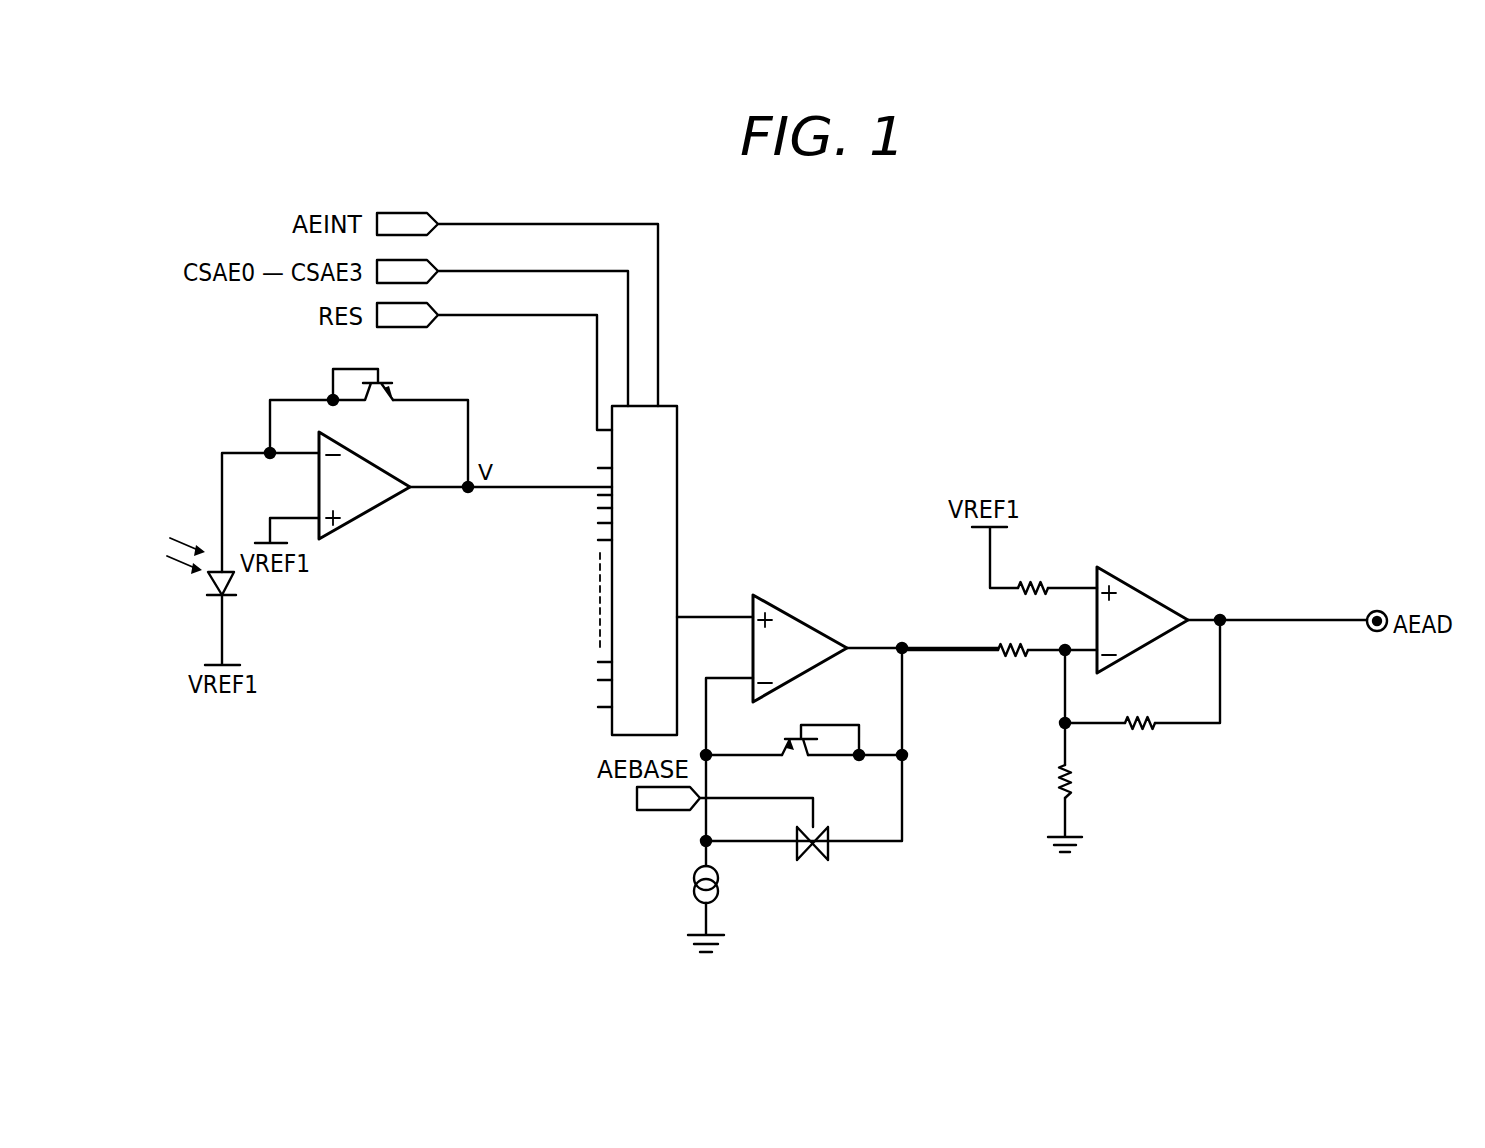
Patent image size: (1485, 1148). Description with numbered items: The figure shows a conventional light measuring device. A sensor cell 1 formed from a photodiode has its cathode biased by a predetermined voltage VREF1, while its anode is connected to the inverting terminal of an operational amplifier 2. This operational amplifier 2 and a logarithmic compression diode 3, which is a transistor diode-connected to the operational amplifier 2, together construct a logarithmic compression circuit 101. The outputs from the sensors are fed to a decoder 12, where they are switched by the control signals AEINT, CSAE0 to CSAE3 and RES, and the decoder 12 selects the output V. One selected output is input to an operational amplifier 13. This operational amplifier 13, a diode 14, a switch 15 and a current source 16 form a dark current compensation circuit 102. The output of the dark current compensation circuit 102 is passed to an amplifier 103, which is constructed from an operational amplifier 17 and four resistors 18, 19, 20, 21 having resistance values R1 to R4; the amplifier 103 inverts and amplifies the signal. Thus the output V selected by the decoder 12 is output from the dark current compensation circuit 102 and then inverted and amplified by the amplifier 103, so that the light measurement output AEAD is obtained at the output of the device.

The sensor cell 1 is at (232, 588).
The operational amplifier 2 is at (365, 516).
The logarithmic compression diode 3 is at (385, 381).
The decoder 12 is at (658, 405).
The operational amplifier 13 is at (800, 617).
The diode 14 is at (787, 735).
The switch 15 is at (830, 830).
The current source 16 is at (691, 888).
The operational amplifier 17 is at (1150, 591).
The resistor 18 is at (1010, 656).
The resistor 19 is at (1150, 739).
The resistor 20 is at (1052, 790).
The resistor 21 is at (1040, 561).
The logarithmic compression circuit 101 is at (262, 386).
The dark current compensation circuit 102 is at (787, 574).
The amplifier 103 is at (1160, 490).